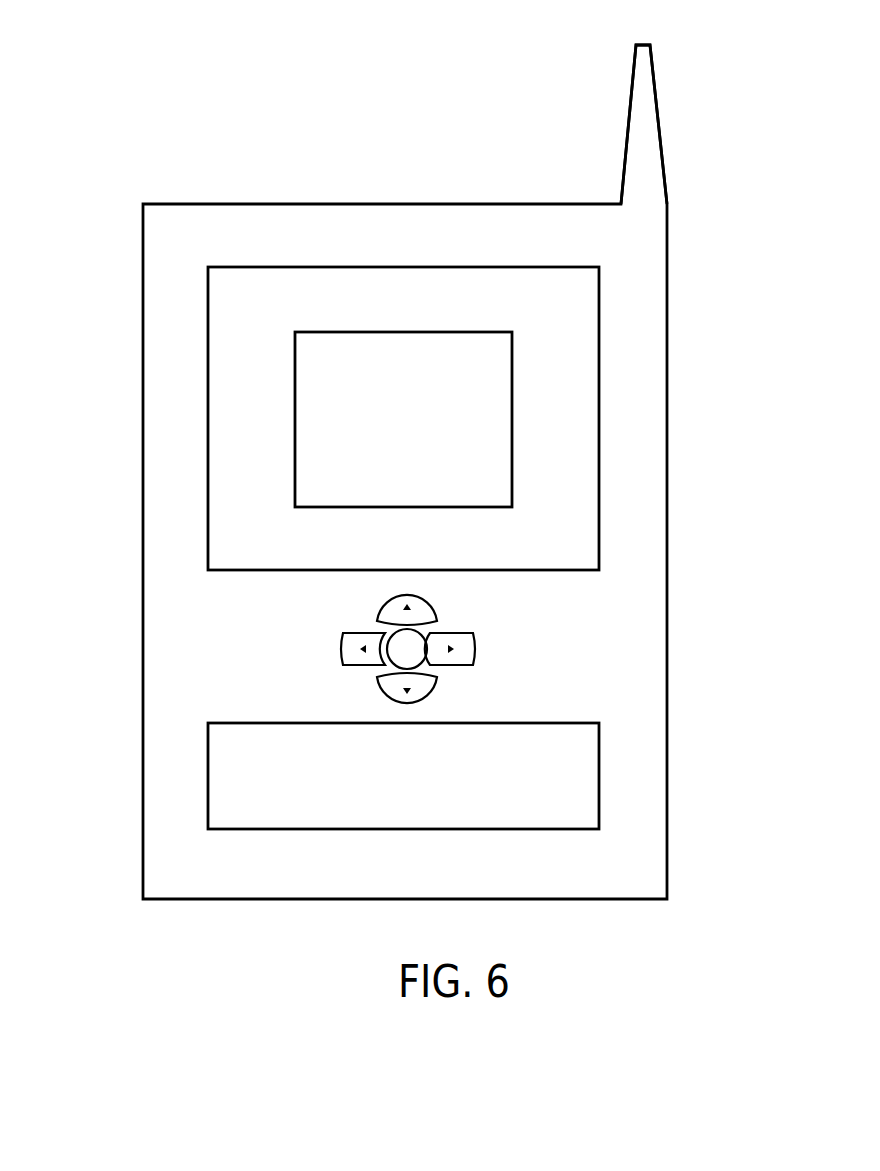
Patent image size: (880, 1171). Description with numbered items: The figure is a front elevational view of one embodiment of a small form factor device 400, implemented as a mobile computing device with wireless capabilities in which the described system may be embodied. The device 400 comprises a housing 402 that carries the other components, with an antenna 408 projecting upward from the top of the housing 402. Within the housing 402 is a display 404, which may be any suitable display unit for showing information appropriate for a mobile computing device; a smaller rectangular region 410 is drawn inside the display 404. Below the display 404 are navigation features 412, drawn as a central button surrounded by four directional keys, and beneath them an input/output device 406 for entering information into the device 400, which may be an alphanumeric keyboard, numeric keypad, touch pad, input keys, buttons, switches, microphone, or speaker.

The small form factor device 400 is at (387, 472).
The housing 402 is at (143, 638).
The display 404 is at (600, 322).
The input/output (I/O) device 406 is at (600, 775).
The antenna 408 is at (628, 127).
The display window 410 is at (402, 332).
The navigation features 412 is at (508, 650).